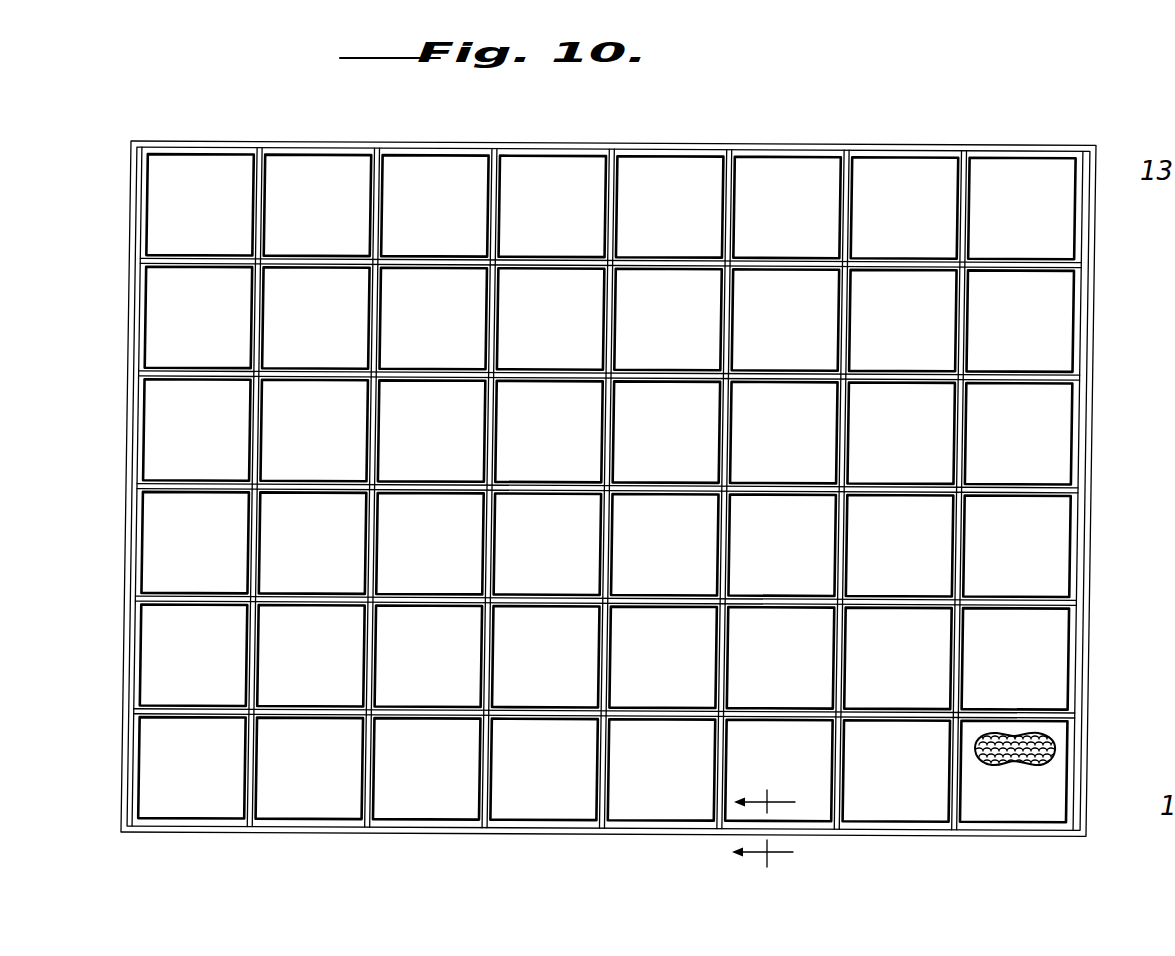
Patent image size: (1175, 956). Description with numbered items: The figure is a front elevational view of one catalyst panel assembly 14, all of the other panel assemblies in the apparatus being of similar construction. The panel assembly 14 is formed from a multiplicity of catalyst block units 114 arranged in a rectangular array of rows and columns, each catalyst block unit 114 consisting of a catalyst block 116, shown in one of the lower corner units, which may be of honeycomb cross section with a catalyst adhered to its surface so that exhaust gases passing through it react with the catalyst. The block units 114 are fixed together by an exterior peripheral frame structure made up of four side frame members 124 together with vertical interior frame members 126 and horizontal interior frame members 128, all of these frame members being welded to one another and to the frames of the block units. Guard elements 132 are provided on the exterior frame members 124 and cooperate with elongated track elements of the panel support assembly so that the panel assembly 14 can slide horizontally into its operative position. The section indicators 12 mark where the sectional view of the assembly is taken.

The catalyst panel assembly 14 is at (801, 139).
The section line 12 is at (782, 831).
The catalyst block unit 114 is at (302, 254).
The catalyst block 116 is at (1050, 752).
The side frame member 124 is at (592, 117).
The vertical interior frame member 126 is at (378, 212).
The horizontal interior frame member 128 is at (402, 378).
The guard element 132 is at (913, 143).